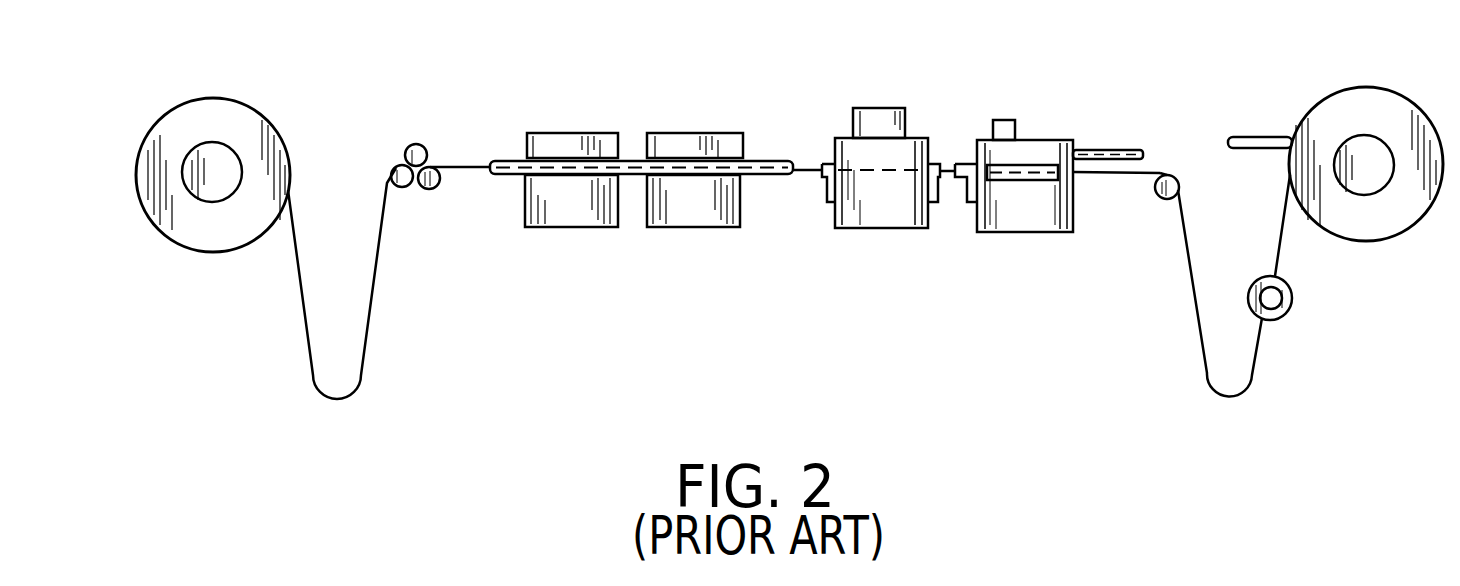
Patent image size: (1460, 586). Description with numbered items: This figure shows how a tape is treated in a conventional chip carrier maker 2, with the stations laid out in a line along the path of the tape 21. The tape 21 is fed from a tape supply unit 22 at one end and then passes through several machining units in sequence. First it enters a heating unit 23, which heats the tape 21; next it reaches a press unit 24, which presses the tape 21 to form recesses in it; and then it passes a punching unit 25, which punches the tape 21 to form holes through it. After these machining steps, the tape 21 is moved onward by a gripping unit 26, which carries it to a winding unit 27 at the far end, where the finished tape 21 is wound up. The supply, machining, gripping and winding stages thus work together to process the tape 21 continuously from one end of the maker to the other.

The chip carrier maker 2 is at (735, 103).
The tape 21 is at (385, 210).
The tape supply unit 22 is at (242, 117).
The heating unit 23 is at (537, 145).
The press unit 24 is at (656, 150).
The punching unit 25 is at (915, 150).
The gripping unit 26 is at (1038, 147).
The winding unit 27 is at (1310, 122).